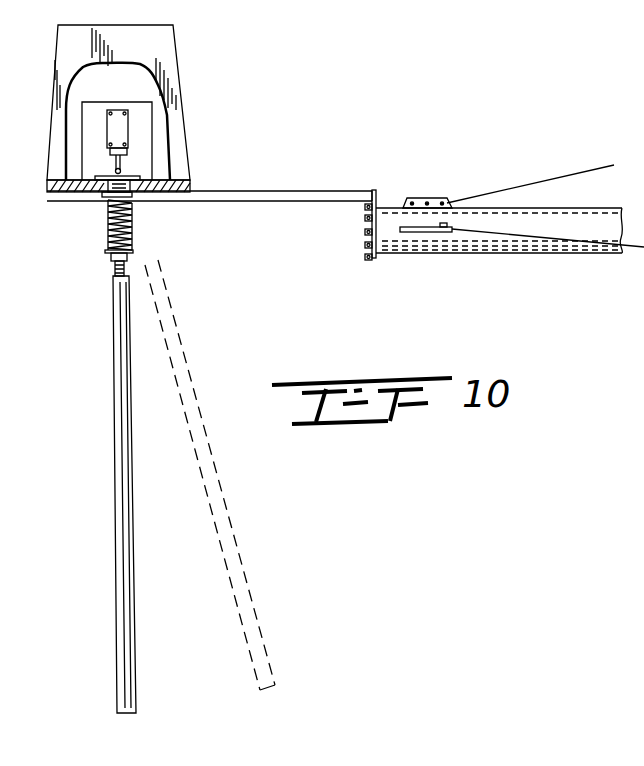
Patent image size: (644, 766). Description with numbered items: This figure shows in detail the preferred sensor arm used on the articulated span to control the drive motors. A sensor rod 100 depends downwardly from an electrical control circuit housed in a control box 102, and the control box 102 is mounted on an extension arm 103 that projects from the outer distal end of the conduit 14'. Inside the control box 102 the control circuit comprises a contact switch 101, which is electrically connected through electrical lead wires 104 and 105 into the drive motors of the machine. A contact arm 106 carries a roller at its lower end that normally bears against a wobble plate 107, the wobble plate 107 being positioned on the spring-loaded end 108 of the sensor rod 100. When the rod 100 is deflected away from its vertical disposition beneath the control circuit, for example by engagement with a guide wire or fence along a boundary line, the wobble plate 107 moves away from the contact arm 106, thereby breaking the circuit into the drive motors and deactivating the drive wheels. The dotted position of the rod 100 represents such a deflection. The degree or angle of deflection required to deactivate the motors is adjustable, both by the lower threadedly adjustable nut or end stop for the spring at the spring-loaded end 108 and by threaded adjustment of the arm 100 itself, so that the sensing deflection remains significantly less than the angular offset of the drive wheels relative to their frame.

The sensor rod 100 is at (115, 392).
The contact switch 101 is at (128, 118).
The control box 102 is at (177, 62).
The extension arm 103 is at (242, 202).
The electrical lead wire 104 is at (559, 177).
The electrical lead wire 105 is at (532, 238).
The contact arm 106 is at (130, 157).
The wobble plate 107 is at (147, 165).
The spring-loaded end 108 is at (130, 210).
The conduit 14' is at (499, 248).